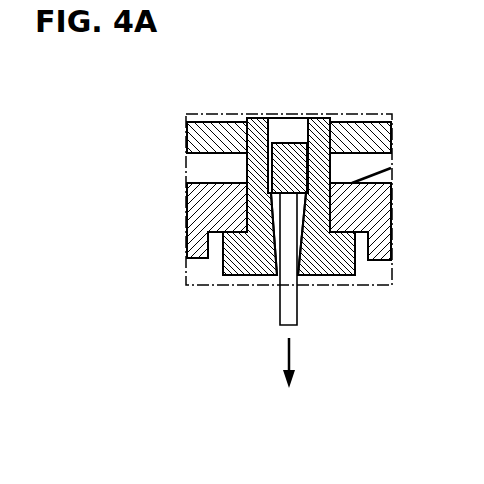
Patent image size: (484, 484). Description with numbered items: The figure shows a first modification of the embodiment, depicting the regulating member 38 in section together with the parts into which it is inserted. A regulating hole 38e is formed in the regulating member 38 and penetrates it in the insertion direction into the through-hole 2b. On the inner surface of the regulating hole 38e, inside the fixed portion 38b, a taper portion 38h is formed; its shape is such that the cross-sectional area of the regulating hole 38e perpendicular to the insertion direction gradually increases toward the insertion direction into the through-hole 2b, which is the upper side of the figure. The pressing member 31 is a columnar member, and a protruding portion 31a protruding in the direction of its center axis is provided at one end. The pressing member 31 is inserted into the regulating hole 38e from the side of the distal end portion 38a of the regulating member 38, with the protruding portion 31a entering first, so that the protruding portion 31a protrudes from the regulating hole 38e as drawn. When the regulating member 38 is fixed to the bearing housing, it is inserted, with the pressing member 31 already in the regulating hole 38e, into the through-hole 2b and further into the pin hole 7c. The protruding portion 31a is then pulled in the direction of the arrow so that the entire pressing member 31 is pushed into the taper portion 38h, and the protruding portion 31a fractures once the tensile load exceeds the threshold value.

The regulating member 38 is at (294, 113).
The distal end portion 38a is at (332, 154).
The fixed portion 38b is at (247, 213).
The through-hole 2b is at (246, 198).
The pin hole 7c is at (320, 134).
The regulating hole 38e is at (342, 267).
The taper portion 38h is at (302, 210).
The pressing member 31 is at (338, 254).
The protruding portion 31a is at (280, 297).